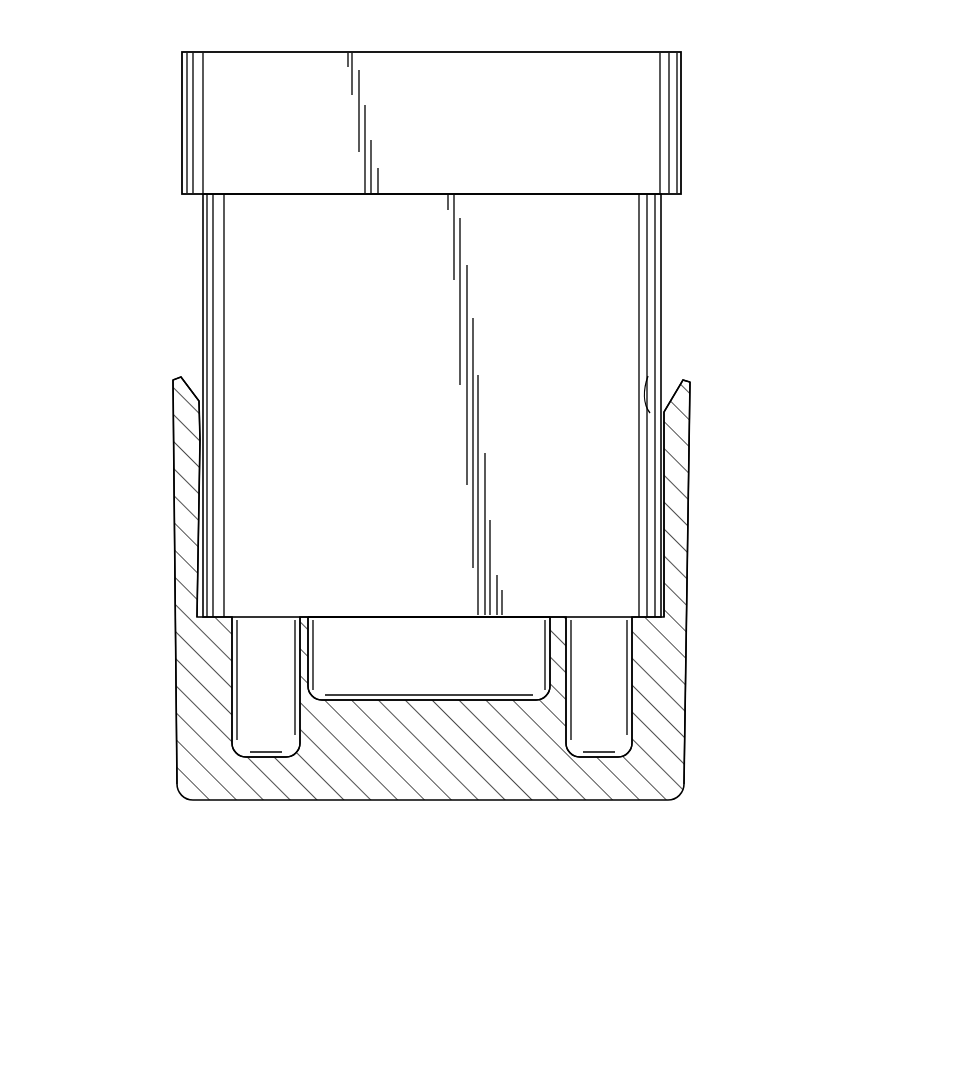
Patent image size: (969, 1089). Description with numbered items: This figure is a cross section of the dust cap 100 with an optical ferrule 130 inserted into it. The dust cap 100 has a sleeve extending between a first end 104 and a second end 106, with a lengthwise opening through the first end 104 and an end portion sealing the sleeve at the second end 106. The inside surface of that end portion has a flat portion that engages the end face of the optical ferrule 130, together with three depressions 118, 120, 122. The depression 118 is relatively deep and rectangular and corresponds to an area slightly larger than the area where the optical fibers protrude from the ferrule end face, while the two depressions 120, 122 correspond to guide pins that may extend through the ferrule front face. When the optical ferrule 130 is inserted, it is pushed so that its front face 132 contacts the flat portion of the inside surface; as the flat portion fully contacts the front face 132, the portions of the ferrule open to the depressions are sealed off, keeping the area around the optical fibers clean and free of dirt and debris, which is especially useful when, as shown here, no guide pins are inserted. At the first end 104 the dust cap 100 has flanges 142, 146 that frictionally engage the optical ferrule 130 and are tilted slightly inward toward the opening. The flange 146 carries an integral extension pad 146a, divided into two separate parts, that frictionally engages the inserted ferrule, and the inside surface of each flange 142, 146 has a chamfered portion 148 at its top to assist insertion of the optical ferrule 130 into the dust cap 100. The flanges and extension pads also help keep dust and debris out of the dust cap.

The dust cap 100 is at (802, 498).
The first end 104 is at (101, 265).
The second end 106 is at (678, 807).
The depression 118 is at (447, 667).
The depression 120 is at (617, 745).
The depression 122 is at (284, 745).
The optical ferrule 130 is at (681, 108).
The front face 132 is at (523, 618).
The flange 142 is at (172, 424).
The flange 146 is at (690, 400).
The extension pad 146a is at (652, 408).
The chamfered portion 148 is at (188, 392).